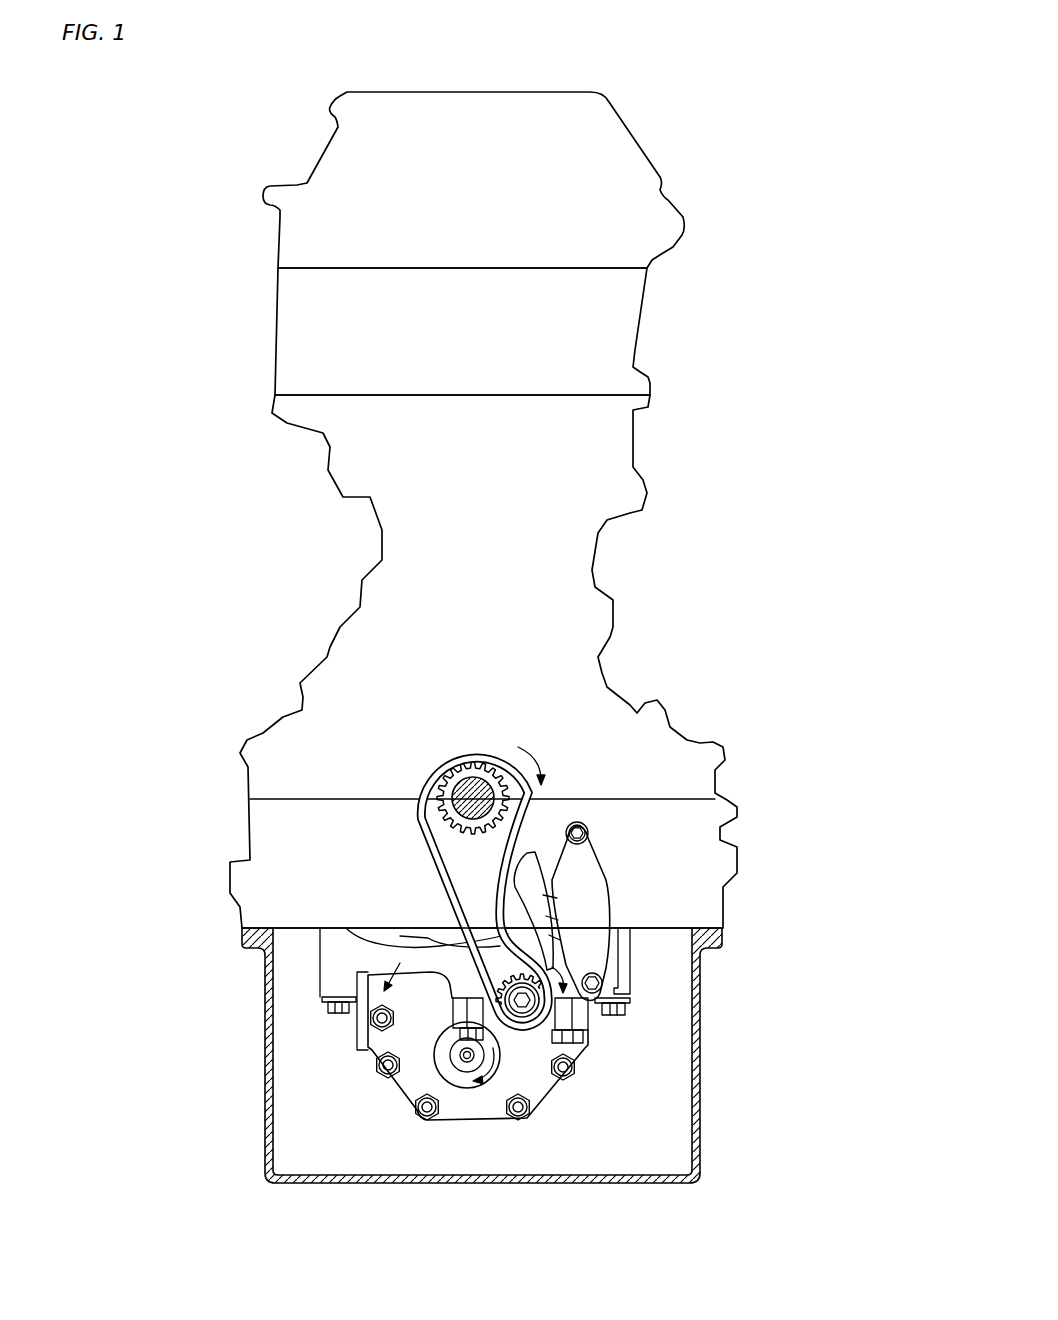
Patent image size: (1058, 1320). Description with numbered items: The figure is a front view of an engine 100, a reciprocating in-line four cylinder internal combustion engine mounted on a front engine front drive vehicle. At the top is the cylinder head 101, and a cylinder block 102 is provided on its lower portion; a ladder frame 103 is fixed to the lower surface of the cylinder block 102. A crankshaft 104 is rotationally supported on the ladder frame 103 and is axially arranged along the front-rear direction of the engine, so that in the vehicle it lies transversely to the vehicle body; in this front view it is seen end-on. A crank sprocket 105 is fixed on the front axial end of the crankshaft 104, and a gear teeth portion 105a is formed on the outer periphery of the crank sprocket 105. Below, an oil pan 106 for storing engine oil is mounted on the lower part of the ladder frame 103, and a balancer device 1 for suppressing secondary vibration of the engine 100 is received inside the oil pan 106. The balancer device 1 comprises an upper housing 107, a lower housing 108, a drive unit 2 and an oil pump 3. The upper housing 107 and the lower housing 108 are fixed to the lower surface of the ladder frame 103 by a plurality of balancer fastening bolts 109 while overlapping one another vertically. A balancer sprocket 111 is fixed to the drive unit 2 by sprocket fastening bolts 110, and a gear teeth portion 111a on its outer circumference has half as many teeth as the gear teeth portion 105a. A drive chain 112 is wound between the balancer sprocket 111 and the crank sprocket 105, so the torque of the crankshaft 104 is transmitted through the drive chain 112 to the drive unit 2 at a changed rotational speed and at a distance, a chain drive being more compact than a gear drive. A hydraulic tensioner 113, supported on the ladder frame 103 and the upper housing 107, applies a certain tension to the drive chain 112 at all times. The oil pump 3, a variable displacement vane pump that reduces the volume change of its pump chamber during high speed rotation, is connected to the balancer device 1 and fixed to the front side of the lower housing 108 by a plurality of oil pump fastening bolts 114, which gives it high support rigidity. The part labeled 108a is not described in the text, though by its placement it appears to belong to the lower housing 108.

The balancer device 1 is at (640, 987).
The drive unit 2 is at (476, 1099).
The oil pump 3 is at (401, 1112).
The engine 100 is at (680, 158).
The cylinder head 101 is at (590, 113).
The cylinder block 102 is at (617, 328).
The ladder frame 103 is at (725, 863).
The crankshaft 104 is at (477, 770).
The crank sprocket 105 is at (330, 792).
The gear teeth portion 105a is at (467, 858).
The oil pan 106 is at (265, 1020).
The upper housing 107 is at (613, 963).
The lower housing 108 is at (587, 1045).
The stud nut 108a is at (462, 1040).
The balancer fastening bolts 109 is at (618, 1018).
The sprocket fastening bolts 110 is at (398, 1086).
The balancer sprocket 111 is at (520, 1014).
The gear teeth portion 111a is at (518, 996).
The drive chain 112 is at (417, 828).
The hydraulic tensioner 113 is at (593, 902).
The oil pump fastening bolts 114 is at (372, 1022).